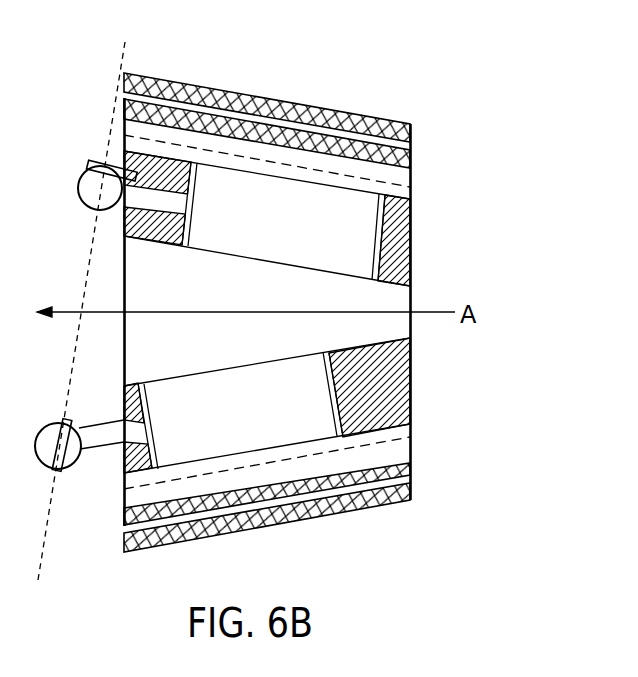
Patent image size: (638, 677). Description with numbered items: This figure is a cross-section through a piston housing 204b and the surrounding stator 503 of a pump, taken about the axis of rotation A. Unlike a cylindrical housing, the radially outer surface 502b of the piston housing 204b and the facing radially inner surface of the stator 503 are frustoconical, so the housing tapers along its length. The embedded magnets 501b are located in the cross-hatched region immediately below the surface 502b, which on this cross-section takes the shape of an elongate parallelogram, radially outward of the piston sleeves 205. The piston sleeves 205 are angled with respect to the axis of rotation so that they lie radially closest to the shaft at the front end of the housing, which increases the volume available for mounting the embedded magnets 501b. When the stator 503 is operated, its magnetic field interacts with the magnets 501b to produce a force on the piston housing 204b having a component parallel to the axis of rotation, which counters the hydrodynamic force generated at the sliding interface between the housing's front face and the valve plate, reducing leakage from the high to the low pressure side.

The piston housing 204b is at (423, 188).
The stator 503 is at (242, 97).
The radially outer surface 502b is at (157, 108).
The embedded magnets 501b is at (328, 158).
The piston sleeves 205 is at (350, 228).